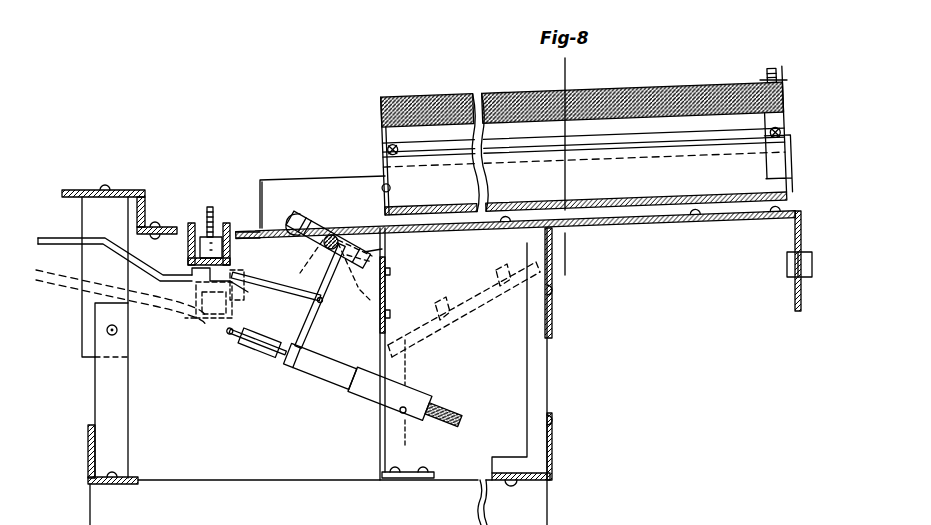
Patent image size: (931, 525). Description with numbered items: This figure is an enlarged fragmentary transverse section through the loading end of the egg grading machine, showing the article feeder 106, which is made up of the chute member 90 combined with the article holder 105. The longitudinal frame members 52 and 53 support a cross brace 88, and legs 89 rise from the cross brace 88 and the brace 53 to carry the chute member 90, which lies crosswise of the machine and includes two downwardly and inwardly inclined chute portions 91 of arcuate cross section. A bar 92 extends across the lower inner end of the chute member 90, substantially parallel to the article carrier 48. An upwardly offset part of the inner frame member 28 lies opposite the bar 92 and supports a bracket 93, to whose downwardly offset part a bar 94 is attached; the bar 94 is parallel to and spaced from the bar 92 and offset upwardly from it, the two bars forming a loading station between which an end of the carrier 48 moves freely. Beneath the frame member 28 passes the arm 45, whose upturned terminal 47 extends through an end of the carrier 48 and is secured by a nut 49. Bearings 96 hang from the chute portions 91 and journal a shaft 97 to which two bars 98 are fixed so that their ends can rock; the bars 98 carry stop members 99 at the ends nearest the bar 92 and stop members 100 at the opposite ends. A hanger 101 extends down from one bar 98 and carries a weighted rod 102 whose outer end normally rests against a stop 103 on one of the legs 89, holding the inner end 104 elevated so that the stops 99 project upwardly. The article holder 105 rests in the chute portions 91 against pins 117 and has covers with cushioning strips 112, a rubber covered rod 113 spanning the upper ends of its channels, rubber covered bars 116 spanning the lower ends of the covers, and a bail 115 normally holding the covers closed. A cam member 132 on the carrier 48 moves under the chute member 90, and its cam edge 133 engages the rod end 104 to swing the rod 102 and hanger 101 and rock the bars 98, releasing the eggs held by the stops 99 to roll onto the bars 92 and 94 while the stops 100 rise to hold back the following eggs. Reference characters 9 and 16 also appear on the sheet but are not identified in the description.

The section line 9- 9 is at (535, 70).
The section line 16- 16 is at (407, 363).
The inner frame member 28 is at (138, 190).
The arm 45 is at (78, 280).
The upturned terminal 47 is at (210, 222).
The article carrier 48 is at (188, 260).
The nut 49 is at (221, 230).
The long brace 52 is at (88, 479).
The longitudinal brace member 53 is at (553, 466).
The cross brace 88 is at (270, 487).
The legs 89 is at (381, 437).
The chute member 90 is at (700, 214).
The chute portions 91 is at (268, 182).
The bar 92 is at (242, 230).
The bracket 93 is at (80, 190).
The bar 94 is at (168, 225).
The bearings 96 is at (332, 253).
The shaft 97 is at (331, 235).
The bars 98 is at (383, 258).
The stop members 99 is at (294, 250).
The stop members 100 is at (362, 236).
The hanger 101 is at (311, 323).
The weighted rod 102 is at (295, 351).
The stop 103 is at (399, 410).
The inner end 104 is at (226, 335).
The article holder 105 is at (724, 78).
The article feeder 106 is at (305, 176).
The cushioning strip 112 is at (420, 100).
The rubber covered rod 113 is at (770, 154).
The bail 115 is at (780, 70).
The rubber covered bar 116 is at (392, 150).
The pins 117 is at (385, 187).
The cam member 132 is at (283, 297).
The cam edge 133 is at (326, 298).